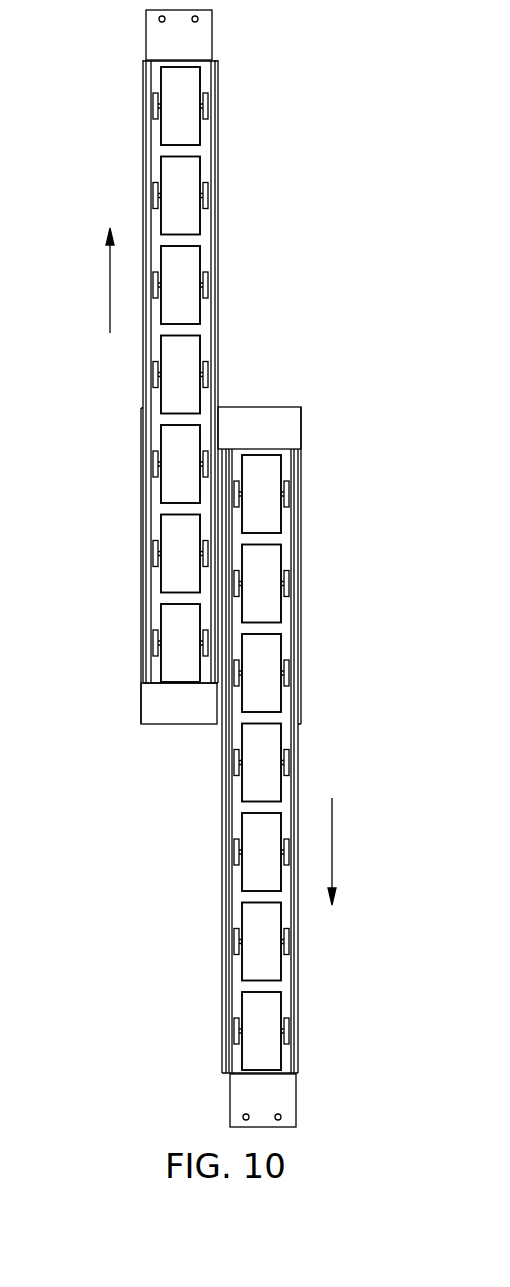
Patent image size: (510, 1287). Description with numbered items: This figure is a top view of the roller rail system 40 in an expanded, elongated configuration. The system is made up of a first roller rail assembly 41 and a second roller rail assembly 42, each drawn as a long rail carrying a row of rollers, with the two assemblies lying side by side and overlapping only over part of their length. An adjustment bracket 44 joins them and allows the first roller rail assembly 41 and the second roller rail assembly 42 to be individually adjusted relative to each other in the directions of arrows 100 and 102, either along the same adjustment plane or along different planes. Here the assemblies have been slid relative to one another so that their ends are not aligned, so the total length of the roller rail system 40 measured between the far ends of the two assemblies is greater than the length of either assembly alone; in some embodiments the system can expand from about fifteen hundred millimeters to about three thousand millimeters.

The roller rail system 40 is at (220, 568).
The first roller rail assembly 41 is at (306, 745).
The second roller rail assembly 42 is at (122, 162).
The adjustment bracket 44 is at (313, 418).
The arrow 100 is at (107, 290).
The arrow 102 is at (333, 845).